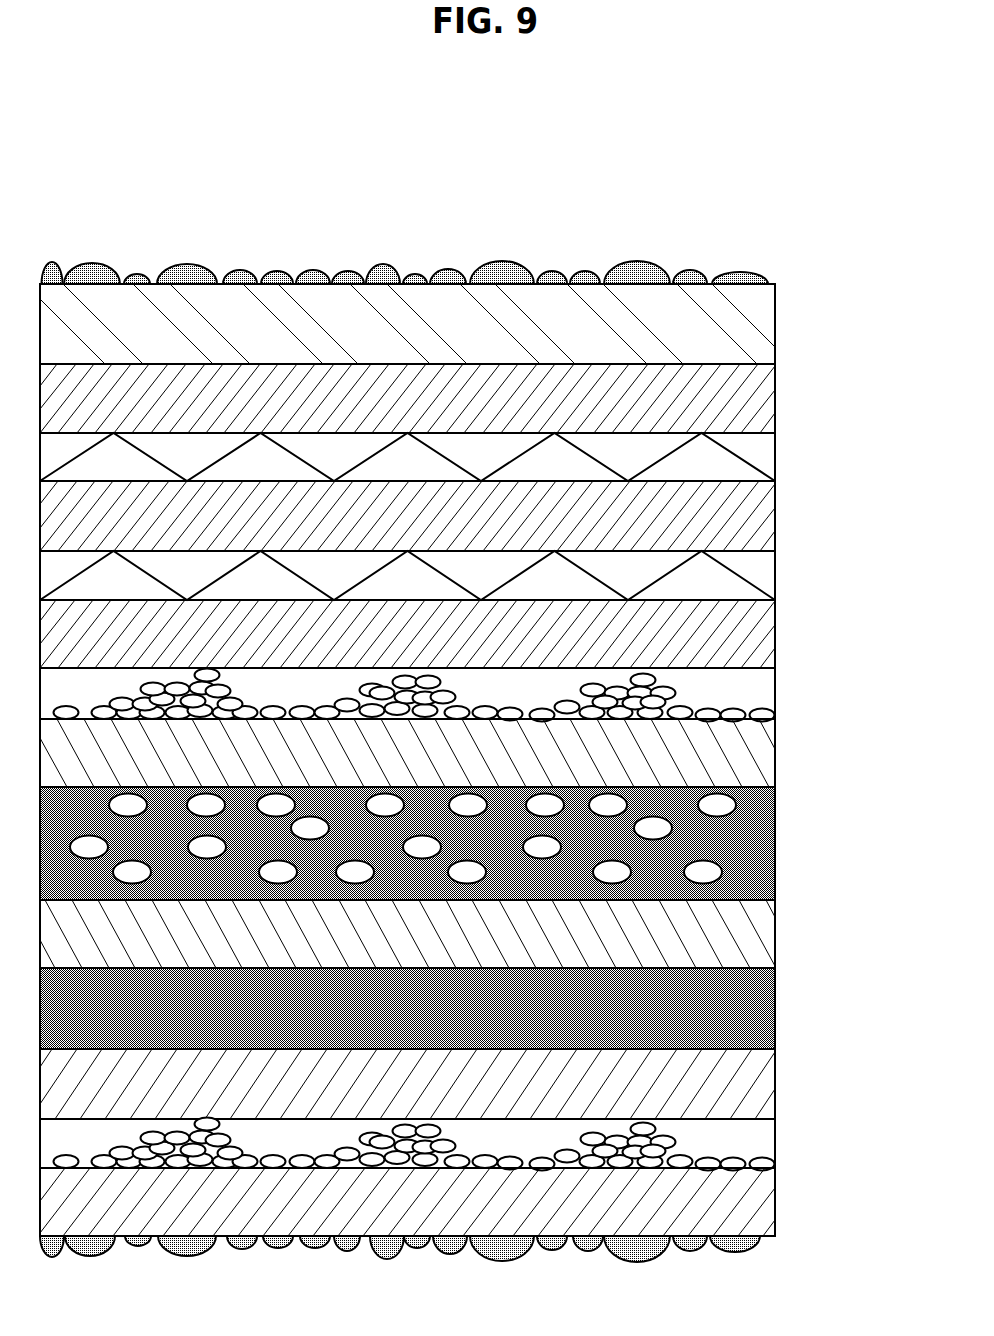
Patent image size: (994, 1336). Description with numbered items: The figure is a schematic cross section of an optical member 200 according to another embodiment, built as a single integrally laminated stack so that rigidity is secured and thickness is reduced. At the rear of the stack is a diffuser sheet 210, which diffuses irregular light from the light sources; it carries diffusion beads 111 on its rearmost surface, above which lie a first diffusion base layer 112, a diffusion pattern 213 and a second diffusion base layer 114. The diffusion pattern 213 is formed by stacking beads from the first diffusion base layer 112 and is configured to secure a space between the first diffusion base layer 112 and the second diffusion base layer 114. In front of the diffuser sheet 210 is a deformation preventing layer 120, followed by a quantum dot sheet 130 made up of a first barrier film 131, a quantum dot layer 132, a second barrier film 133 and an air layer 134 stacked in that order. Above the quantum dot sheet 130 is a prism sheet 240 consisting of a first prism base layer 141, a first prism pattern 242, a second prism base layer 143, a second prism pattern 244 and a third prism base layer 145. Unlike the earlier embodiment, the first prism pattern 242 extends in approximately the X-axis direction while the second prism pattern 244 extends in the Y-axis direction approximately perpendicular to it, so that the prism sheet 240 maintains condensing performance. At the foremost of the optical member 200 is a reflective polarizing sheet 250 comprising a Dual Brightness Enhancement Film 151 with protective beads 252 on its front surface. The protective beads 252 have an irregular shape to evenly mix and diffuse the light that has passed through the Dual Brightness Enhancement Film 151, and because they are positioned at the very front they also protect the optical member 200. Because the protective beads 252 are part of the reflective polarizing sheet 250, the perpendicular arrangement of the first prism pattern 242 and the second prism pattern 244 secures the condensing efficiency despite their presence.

The optical member 200 is at (92, 184).
The reflective polarizing sheet 250 is at (475, 305).
The protective bead 252 is at (748, 275).
The Dual Brightness Enhancement Film (DBEF) 151 is at (763, 323).
The prism sheet 240 is at (474, 516).
The third prism base layer 145 is at (763, 407).
The second prism pattern 244 is at (745, 472).
The second prism base layer 143 is at (763, 522).
The first prism pattern 242 is at (745, 590).
The first prism base layer 141 is at (443, 634).
The quantum dot sheet 130 is at (474, 818).
The air layer 134 is at (763, 697).
The second barrier film 133 is at (763, 757).
The quantum dot layer 132 is at (763, 847).
The first barrier film 131 is at (443, 934).
The deformation preventing layer 120 is at (763, 1015).
The diffuser sheet 210 is at (474, 1155).
The second diffusion base layer 114 is at (763, 1093).
The diffusion pattern 213 is at (735, 1143).
The first diffusion base layer 112 is at (763, 1202).
The diffusion bead 111 is at (443, 1242).